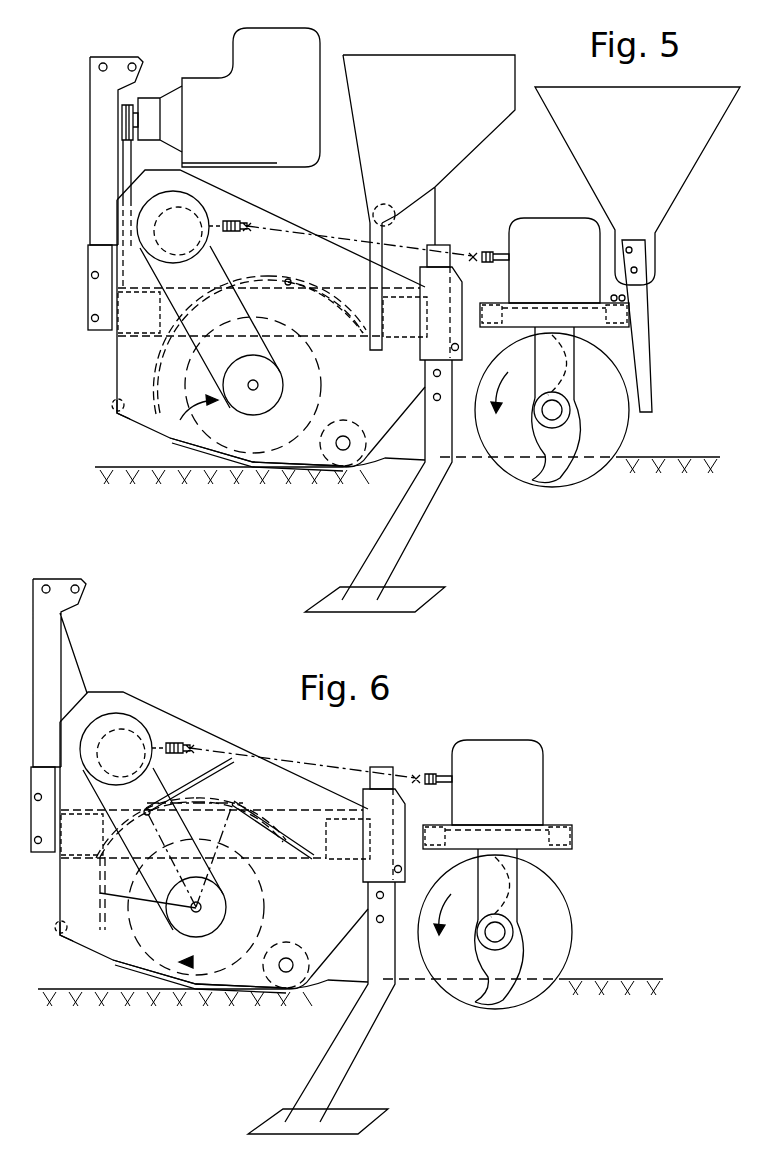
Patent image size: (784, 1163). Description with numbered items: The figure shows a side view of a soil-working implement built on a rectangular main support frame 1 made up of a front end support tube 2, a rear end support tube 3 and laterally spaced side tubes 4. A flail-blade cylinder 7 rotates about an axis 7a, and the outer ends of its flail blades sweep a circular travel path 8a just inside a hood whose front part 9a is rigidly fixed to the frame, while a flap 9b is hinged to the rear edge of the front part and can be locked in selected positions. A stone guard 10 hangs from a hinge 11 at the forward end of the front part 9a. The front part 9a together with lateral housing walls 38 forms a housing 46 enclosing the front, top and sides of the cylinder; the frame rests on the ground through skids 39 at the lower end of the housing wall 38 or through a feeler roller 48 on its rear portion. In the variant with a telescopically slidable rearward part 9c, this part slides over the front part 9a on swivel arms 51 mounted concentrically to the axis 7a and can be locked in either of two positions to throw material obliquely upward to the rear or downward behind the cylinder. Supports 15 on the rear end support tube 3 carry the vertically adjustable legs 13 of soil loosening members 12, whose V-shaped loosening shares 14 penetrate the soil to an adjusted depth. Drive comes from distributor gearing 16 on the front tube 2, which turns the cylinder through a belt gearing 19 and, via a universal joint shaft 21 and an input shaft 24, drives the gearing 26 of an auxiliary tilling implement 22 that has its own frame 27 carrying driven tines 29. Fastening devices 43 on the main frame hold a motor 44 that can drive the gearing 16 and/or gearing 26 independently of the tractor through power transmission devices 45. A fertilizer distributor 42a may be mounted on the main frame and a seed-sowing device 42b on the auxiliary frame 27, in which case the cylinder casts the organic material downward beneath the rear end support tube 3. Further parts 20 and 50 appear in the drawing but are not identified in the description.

In FIG. 5, the main support frame 1 is at (118, 353).
In FIG. 5, the front end support tube 2 is at (125, 307).
In FIG. 5, the rear end support tube 3 is at (390, 334).
In FIG. 5, the side tube 4 is at (346, 330).
In FIG. 5, the flail-blade cylinder 7 is at (194, 418).
In FIG. 5, the axis of rotation 7a is at (258, 384).
In FIG. 6, the axis of rotation 7a is at (211, 907).
In FIG. 5, the circular travel path 8a is at (274, 447).
In FIG. 5, the front part of hood 9a is at (160, 370).
In FIG. 6, the front part of hood 9a is at (128, 864).
In FIG. 5, the flap 9b is at (349, 292).
In FIG. 6, the flap 9b is at (230, 797).
In FIG. 6, the telescopically slidable rearward part 9c is at (202, 839).
In FIG. 5, the stone guard 10 is at (165, 426).
In FIG. 6, the stone guard 10 is at (55, 942).
In FIG. 5, the hinge 11 is at (117, 411).
In FIG. 6, the hinge 11 is at (47, 919).
In FIG. 5, the soil loosening member 12 is at (432, 520).
In FIG. 6, the soil loosening member 12 is at (326, 1002).
In FIG. 5, the leg 13 is at (440, 245).
In FIG. 6, the leg 13 is at (380, 758).
In FIG. 5, the loosening share 14 is at (444, 601).
In FIG. 5, the support 15 is at (463, 292).
In FIG. 5, the distributor gearing 16 is at (137, 183).
In FIG. 6, the distributor gearing 16 is at (151, 795).
In FIG. 5, the belt gearing 19 is at (148, 262).
In FIG. 6, the belt gearing 19 is at (67, 809).
In FIG. 5, the coupling 20 is at (238, 219).
In FIG. 5, the universal joint shaft 21 is at (356, 243).
In FIG. 6, the universal joint shaft 21 is at (284, 745).
In FIG. 5, the auxiliary implement 22 is at (522, 494).
In FIG. 6, the auxiliary implement 22 is at (521, 893).
In FIG. 5, the input shaft 24 is at (495, 252).
In FIG. 5, the gearing 26 is at (543, 274).
In FIG. 6, the gearing 26 is at (520, 777).
In FIG. 5, the auxiliary support frame 27 is at (510, 327).
In FIG. 5, the tines 29 is at (572, 426).
In FIG. 6, the tines 29 is at (517, 931).
In FIG. 5, the lateral housing wall 38 is at (120, 362).
In FIG. 5, the skid 39 is at (280, 470).
In FIG. 6, the skid 39 is at (182, 976).
In FIG. 5, the fertilizer distributor 42a is at (400, 112).
In FIG. 5, the seed sowing device 42b is at (646, 137).
In FIG. 5, the fastening devices 43 is at (260, 178).
In FIG. 5, the motor 44 is at (238, 112).
In FIG. 5, the power transmission devices 45 is at (121, 142).
In FIG. 5, the housing 46 is at (311, 216).
In FIG. 5, the feeler roller 48 is at (355, 420).
In FIG. 5, the seed guide 50 is at (302, 270).
In FIG. 6, the seed guide 50 is at (287, 797).
In FIG. 6, the swivel arms 51 is at (148, 921).